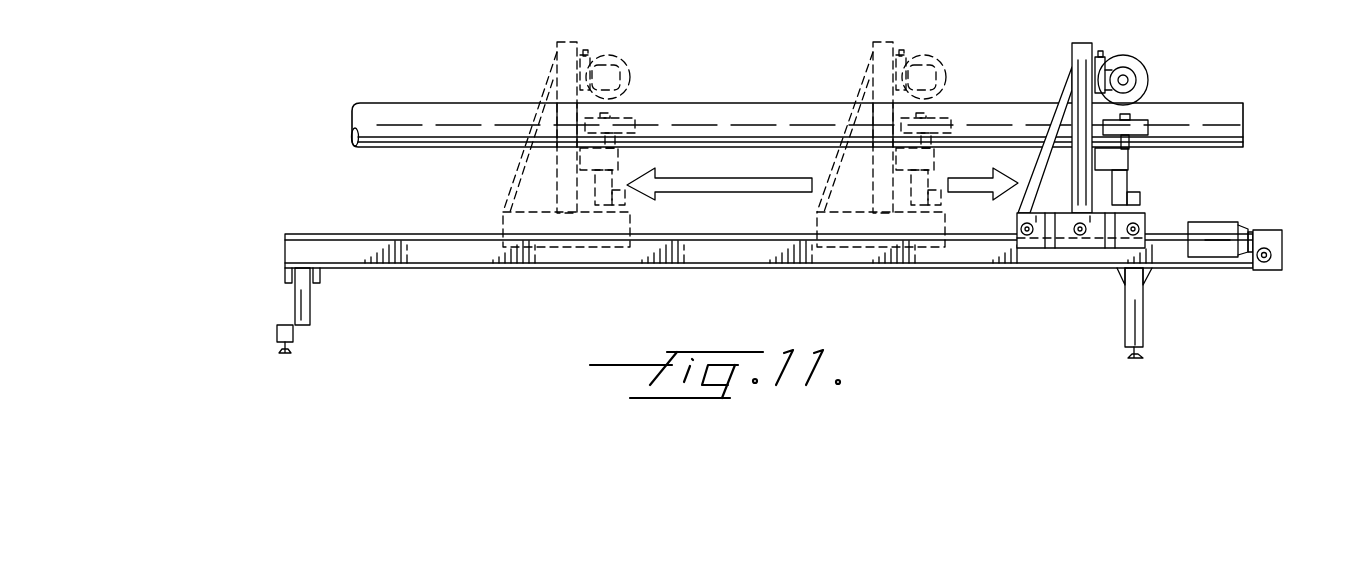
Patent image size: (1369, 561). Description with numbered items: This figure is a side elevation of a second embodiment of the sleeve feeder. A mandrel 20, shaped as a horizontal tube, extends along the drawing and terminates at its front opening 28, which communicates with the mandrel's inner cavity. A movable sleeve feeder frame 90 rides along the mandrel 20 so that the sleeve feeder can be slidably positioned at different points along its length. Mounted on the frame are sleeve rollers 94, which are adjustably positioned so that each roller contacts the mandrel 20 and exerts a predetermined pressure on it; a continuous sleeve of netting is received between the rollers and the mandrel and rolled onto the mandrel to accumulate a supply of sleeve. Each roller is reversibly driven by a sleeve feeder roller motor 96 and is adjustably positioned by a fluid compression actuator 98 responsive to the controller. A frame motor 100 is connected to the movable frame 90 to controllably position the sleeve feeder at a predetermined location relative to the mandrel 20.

The mandrel 20 is at (715, 103).
The front opening 28 is at (1243, 125).
The sleeve feeder frame 90 is at (1085, 43).
The sleeve rollers 94 is at (1142, 62).
The sleeve feeder roller motor 96 is at (1130, 163).
The fluid compression actuator 98 is at (1141, 198).
The frame motor 100 is at (1225, 222).